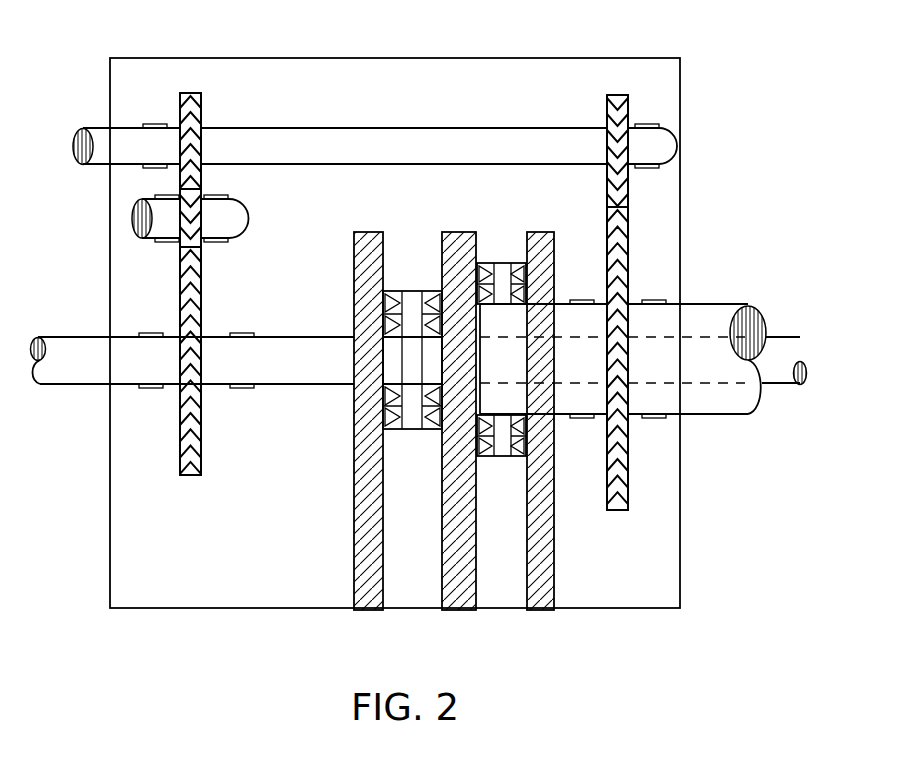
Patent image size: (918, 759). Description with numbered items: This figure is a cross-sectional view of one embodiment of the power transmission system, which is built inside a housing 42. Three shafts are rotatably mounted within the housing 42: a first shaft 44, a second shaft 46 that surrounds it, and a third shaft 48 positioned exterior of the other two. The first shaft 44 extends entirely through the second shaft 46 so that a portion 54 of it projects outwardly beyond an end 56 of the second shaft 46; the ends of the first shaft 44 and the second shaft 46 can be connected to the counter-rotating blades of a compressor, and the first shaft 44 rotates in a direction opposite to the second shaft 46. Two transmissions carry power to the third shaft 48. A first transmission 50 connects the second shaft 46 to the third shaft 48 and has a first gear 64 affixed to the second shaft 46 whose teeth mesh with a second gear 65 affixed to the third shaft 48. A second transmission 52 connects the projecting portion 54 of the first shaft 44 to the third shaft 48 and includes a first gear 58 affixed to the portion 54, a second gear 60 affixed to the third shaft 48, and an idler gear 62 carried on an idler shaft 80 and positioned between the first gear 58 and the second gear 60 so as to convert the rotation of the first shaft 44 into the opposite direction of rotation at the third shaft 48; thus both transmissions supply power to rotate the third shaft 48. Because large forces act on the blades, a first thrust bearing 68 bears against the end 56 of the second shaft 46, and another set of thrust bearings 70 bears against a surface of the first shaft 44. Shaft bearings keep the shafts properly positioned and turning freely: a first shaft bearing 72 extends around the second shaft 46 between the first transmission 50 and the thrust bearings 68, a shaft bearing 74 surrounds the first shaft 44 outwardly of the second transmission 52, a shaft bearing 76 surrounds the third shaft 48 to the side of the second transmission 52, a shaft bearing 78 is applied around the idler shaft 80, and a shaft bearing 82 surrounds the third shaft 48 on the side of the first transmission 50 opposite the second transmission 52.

The housing 42 is at (684, 236).
The first shaft 44 is at (797, 330).
The second shaft 46 is at (732, 418).
The third shaft 48 is at (484, 126).
The first transmission 50 is at (604, 222).
The second transmission 52 is at (206, 262).
The portion of the first shaft 54 is at (274, 335).
The end of the second shaft 56 is at (488, 312).
The first gear 58 is at (206, 418).
The second gear 60 is at (204, 118).
The idler gear 62 is at (207, 192).
The first gear 64 is at (616, 513).
The second gear 65 is at (630, 102).
The first thrust bearing 68 is at (500, 262).
The thrust bearings 70 is at (412, 290).
The first shaft bearing 72 is at (588, 420).
The shaft bearing 74 is at (156, 390).
The shaft bearing 76 is at (156, 122).
The shaft bearing 78 is at (166, 246).
The idler shaft 80 is at (252, 212).
The shaft bearing 82 is at (648, 122).